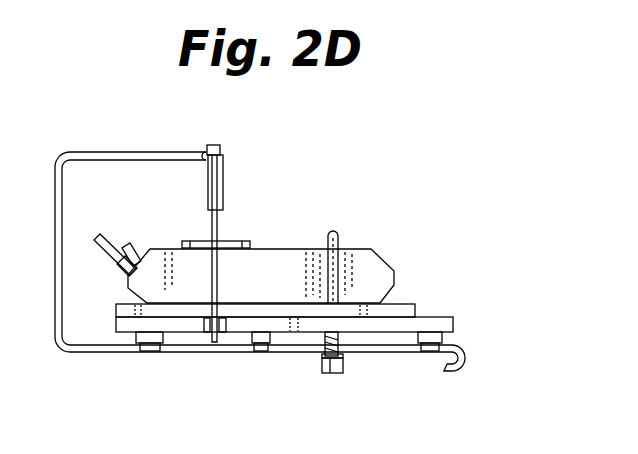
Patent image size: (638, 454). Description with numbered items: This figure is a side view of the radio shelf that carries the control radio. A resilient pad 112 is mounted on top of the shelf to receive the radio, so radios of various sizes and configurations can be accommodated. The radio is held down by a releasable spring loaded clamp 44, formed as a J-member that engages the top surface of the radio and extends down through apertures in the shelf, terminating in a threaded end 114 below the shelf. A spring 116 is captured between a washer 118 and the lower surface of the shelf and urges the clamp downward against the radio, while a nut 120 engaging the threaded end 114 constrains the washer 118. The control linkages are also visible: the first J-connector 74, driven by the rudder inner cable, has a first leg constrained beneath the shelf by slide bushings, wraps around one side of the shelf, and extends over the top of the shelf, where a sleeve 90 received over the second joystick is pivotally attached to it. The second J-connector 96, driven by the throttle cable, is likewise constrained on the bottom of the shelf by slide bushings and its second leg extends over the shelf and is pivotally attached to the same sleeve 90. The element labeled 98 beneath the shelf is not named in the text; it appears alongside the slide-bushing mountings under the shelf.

The second J-connector 96 is at (114, 152).
The sleeve 90 is at (219, 147).
The first J-connector 74 is at (218, 231).
The spring loaded clamp 44 is at (336, 228).
The resilient pad 112 is at (416, 303).
The foot 98 is at (150, 354).
The threaded end 114 is at (343, 352).
The spring 116 is at (328, 352).
The washer 118 is at (330, 356).
The nut 120 is at (340, 373).